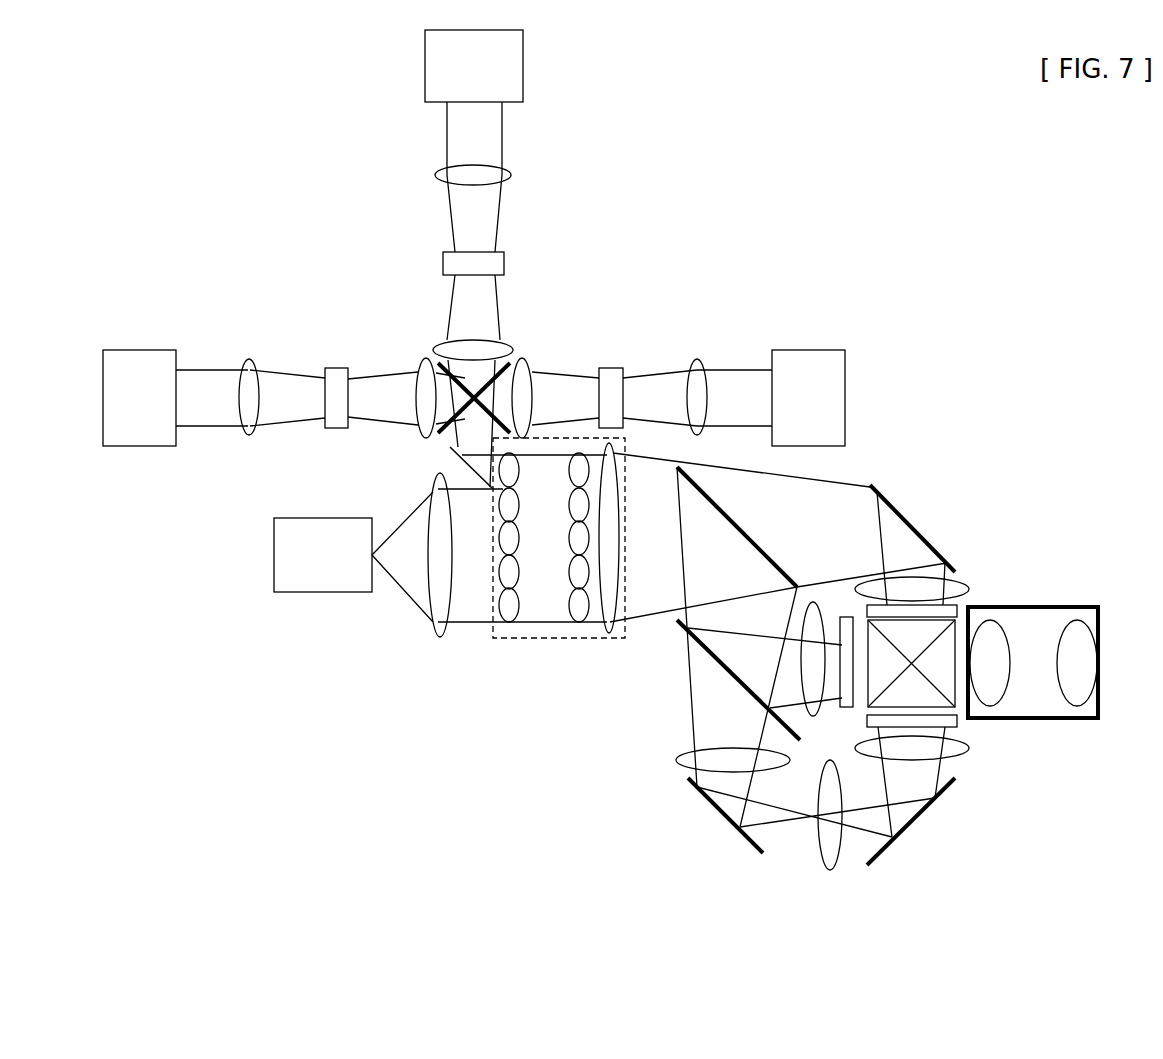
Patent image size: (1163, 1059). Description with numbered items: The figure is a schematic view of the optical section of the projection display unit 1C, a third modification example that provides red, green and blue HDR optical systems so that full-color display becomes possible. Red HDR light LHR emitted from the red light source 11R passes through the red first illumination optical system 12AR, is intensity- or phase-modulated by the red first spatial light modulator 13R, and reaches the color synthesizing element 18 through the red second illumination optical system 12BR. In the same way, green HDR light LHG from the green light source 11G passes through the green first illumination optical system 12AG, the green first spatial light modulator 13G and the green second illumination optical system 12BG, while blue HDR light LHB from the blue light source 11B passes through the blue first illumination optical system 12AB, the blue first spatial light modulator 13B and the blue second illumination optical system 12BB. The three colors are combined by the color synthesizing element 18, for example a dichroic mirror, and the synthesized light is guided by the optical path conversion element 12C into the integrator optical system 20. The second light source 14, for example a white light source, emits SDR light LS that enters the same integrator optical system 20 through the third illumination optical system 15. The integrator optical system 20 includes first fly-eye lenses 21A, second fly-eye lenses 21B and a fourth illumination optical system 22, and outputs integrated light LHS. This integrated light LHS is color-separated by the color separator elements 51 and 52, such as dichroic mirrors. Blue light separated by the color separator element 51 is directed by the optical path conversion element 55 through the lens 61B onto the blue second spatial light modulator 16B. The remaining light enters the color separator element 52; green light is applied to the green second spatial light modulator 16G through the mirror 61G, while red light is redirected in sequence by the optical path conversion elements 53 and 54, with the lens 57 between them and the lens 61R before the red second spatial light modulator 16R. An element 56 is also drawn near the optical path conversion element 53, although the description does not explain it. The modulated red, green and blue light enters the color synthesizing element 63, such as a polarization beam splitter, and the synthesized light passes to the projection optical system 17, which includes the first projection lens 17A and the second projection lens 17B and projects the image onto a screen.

The projection display unit 1C is at (841, 181).
The green light source 11G is at (515, 62).
The green HDR light LHG is at (447, 138).
The green first illumination optical system 12AG is at (508, 175).
The green first spatial light modulator 13G is at (498, 262).
The green second illumination optical system 12BG is at (500, 347).
The blue second illumination optical system 12BB is at (523, 362).
The red second illumination optical system 12BR is at (427, 360).
The color synthesizing element 18 is at (438, 432).
The optical path conversion element 12C is at (450, 448).
The red HDR light LHR is at (207, 427).
The red light source 11R is at (140, 357).
The red first illumination optical system 12AR is at (250, 360).
The red first spatial light modulator 13R is at (338, 375).
The blue first spatial light modulator 13B is at (610, 378).
The blue first illumination optical system 12AB is at (698, 362).
The blue HDR light LHB is at (743, 425).
The blue light source 11B is at (808, 357).
The second light source 14 is at (325, 585).
The SDR light LS is at (405, 588).
The third illumination optical system 15 is at (440, 640).
The integrator optical system 20 is at (543, 643).
The first fly-eye lenses 21A is at (509, 612).
The second fly-eye lenses 21B is at (580, 612).
The fourth illumination optical system 22 is at (609, 635).
The integrated light LHS is at (650, 463).
The color separator element 51 is at (740, 527).
The optical path conversion element 55 is at (917, 527).
The color separator element 52 is at (728, 653).
The optical path conversion element 53 is at (720, 822).
The optical path conversion element 54 is at (912, 823).
The relay lens 56 is at (678, 760).
The lens 57 is at (822, 872).
The mirror 61G is at (813, 600).
The green second spatial light modulator 16G is at (847, 620).
The color synthesizing element 63 is at (870, 698).
The blue second spatial light modulator 16B is at (957, 610).
The lens 61B is at (957, 583).
The red second spatial light modulator 16R is at (957, 722).
The lens 61R is at (957, 750).
The projection optical system 17 is at (1065, 710).
The first projection lens 17A is at (1010, 663).
The second projection lens 17B is at (1098, 627).